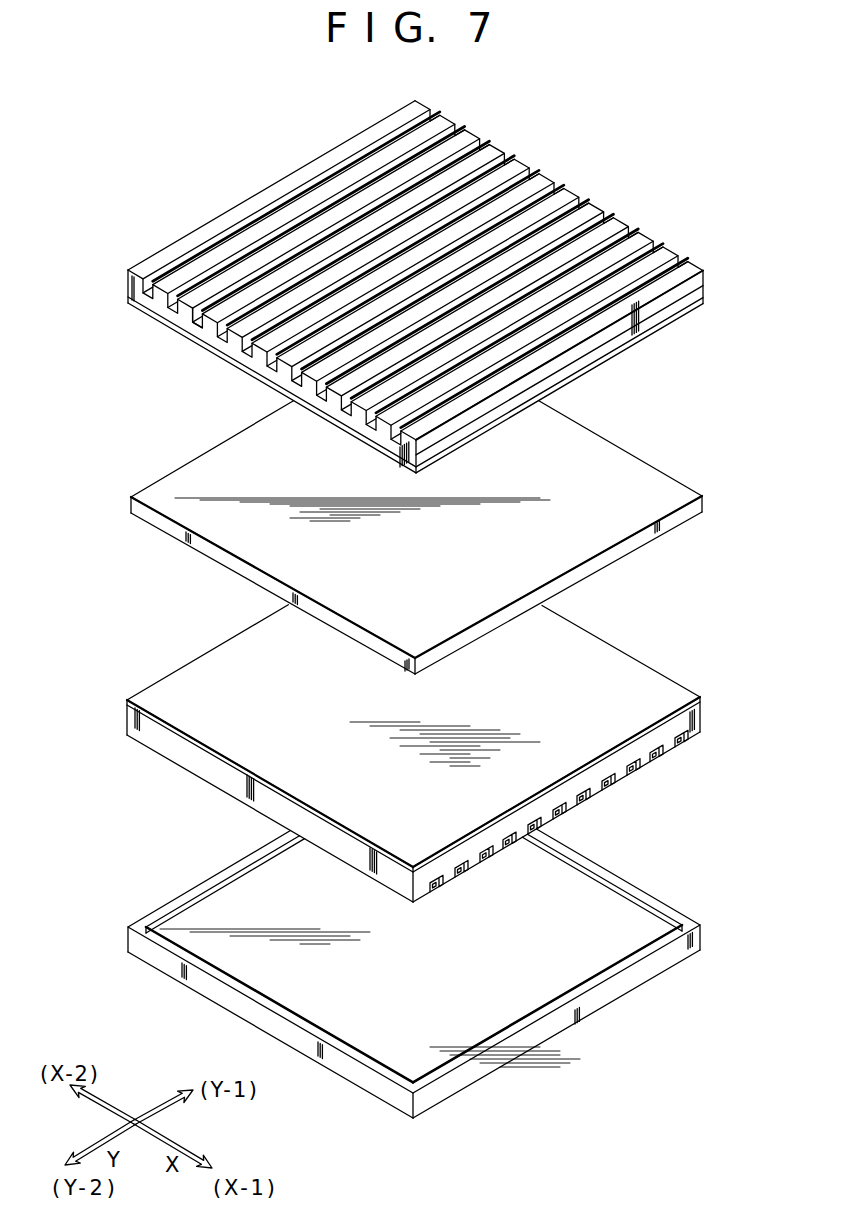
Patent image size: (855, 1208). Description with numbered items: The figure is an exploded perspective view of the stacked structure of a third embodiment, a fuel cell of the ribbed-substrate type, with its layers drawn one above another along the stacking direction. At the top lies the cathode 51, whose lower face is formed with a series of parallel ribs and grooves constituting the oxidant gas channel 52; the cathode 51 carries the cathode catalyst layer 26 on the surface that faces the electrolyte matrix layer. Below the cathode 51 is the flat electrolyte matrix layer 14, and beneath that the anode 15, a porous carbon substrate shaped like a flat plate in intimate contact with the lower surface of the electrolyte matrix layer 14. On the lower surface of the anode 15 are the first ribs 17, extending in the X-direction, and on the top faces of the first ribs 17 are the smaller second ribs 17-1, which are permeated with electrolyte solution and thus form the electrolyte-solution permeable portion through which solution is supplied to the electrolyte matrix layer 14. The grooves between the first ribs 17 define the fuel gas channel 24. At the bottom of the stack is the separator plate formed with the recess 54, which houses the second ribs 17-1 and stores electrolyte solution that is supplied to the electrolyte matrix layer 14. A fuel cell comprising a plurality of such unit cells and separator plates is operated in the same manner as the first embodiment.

The cathode catalyst layer 26 is at (632, 342).
The oxidant gas channel 52 is at (200, 320).
The electrolyte matrix layer 14 is at (702, 498).
The anode 15 is at (700, 710).
The first ribs 17 is at (664, 748).
The second ribs 17-1 is at (622, 763).
The fuel gas channel 24 is at (582, 805).
The cathode 51 is at (703, 937).
The recess 54 is at (592, 962).